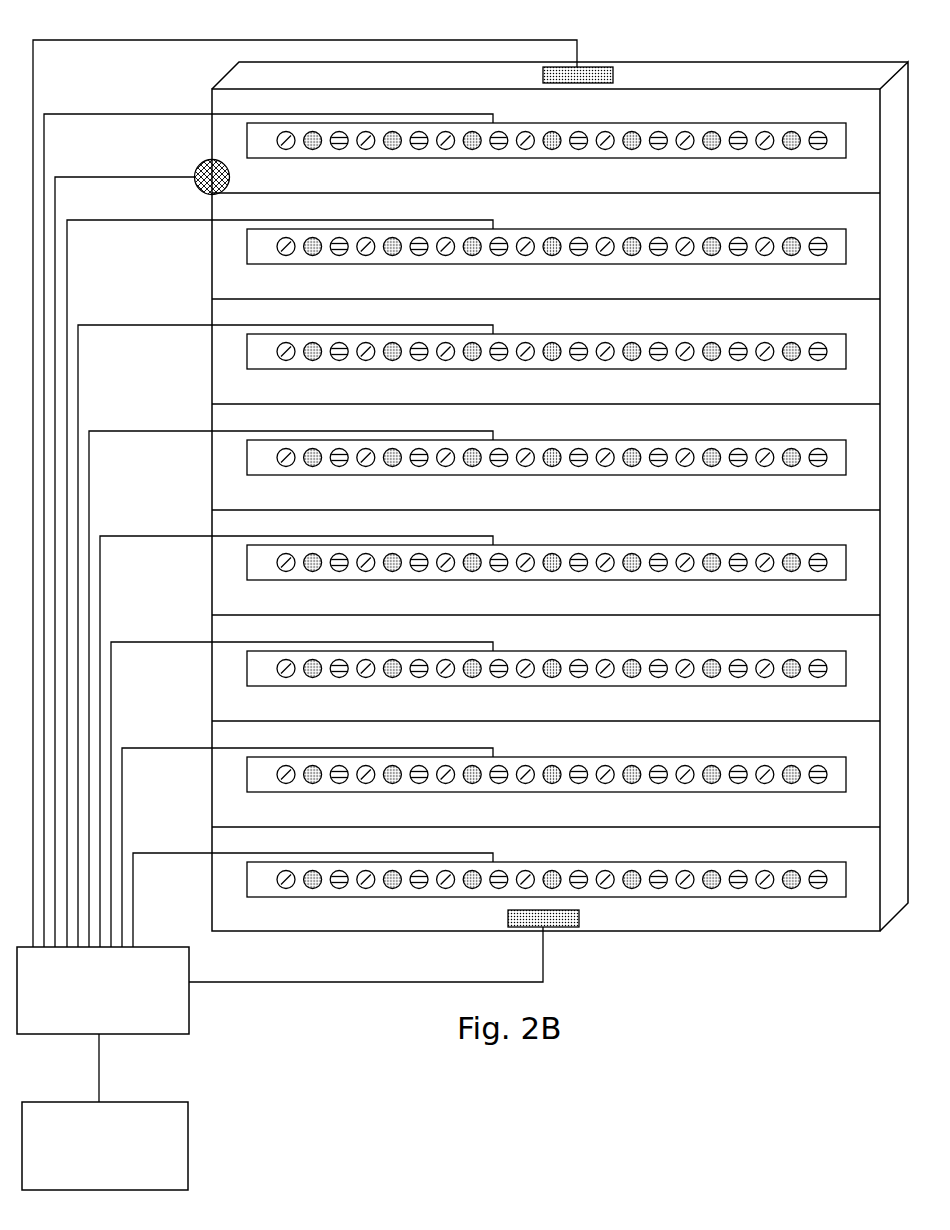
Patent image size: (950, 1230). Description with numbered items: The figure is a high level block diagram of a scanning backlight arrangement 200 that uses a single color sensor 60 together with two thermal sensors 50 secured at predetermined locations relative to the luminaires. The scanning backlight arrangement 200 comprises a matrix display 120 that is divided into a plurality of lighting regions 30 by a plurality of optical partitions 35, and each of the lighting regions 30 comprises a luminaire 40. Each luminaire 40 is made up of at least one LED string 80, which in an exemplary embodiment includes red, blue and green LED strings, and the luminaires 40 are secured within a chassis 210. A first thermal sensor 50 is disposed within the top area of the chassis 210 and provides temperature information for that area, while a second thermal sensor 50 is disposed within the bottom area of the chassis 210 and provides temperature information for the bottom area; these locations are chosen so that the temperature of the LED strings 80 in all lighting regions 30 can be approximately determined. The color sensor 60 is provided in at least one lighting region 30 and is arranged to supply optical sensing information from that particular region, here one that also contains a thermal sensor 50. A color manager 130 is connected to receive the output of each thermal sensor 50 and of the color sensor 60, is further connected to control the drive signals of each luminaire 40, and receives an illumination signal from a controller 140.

The scanning backlight arrangement 200 is at (564, 472).
The matrix display 120 is at (785, 88).
The chassis 210 is at (632, 62).
The lighting region 30 is at (564, 511).
The optical partition 35 is at (532, 193).
The luminaire 40 is at (423, 158).
The LED string 80 is at (791, 131).
The thermal sensor 50 is at (588, 67).
The color sensor 60 is at (230, 166).
The color manager 130 is at (189, 997).
The controller 140 is at (110, 1101).